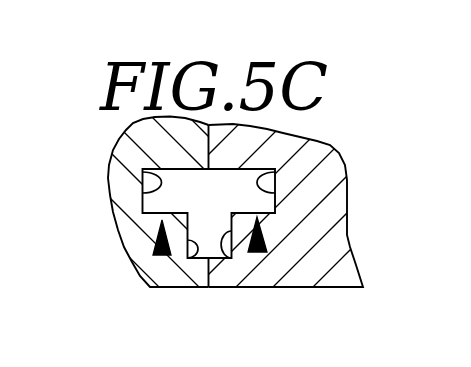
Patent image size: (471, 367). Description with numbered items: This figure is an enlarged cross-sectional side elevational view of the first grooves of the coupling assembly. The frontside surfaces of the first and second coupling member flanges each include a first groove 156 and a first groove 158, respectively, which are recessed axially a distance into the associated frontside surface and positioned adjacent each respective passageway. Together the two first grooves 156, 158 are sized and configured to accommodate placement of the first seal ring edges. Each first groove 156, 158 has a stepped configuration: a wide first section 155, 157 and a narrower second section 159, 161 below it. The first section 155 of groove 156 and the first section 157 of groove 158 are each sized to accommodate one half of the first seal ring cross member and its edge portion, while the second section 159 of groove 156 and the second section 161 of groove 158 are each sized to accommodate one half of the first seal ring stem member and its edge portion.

The first section 155 is at (267, 169).
The first section 157 is at (157, 170).
The first groove 158 is at (163, 256).
The first groove 156 is at (257, 253).
The second section 161 is at (198, 252).
The second section 159 is at (222, 245).